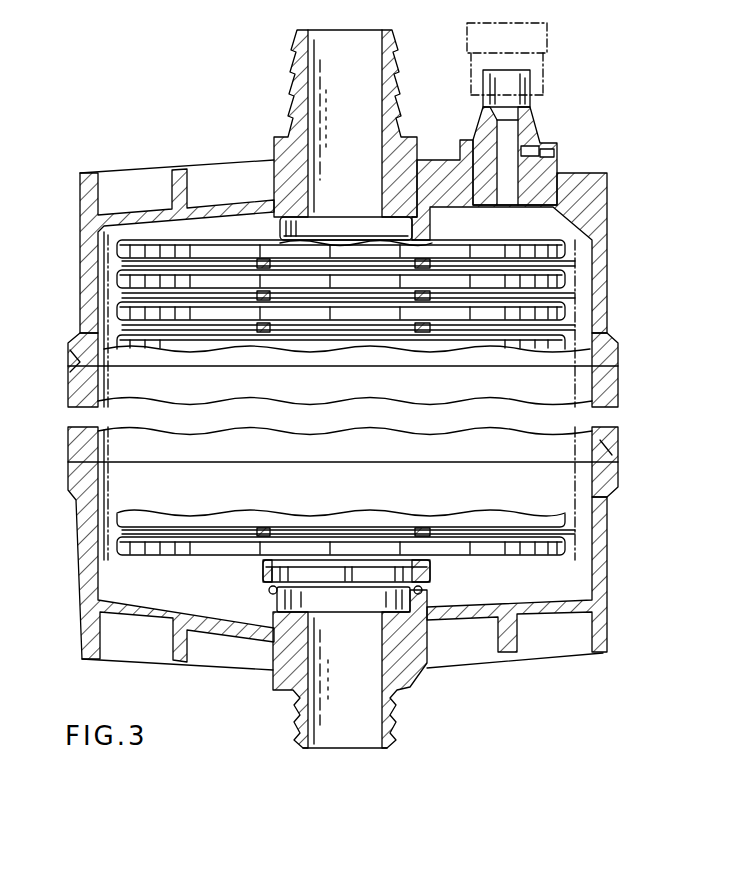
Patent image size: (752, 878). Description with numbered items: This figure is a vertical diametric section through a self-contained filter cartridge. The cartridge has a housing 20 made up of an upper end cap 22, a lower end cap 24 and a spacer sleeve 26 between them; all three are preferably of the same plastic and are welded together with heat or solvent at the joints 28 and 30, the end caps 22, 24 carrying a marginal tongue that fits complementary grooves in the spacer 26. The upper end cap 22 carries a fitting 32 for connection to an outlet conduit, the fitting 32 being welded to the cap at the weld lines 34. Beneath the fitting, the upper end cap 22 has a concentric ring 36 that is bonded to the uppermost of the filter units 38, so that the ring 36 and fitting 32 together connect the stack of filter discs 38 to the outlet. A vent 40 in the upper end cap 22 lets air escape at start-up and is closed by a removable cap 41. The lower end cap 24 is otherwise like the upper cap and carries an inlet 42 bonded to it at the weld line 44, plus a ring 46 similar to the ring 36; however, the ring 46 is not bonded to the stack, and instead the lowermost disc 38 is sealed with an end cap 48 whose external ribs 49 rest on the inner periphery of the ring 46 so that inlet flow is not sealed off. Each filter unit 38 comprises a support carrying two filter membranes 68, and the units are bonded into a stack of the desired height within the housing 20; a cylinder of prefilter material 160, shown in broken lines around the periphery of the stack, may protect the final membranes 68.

The housing 20 is at (627, 214).
The upper end cap 22 is at (80, 234).
The lower end cap 24 is at (76, 519).
The spacer sleeve 26 is at (68, 396).
The weld 28 is at (612, 366).
The weld 30 is at (614, 462).
The fitting 32 is at (398, 100).
The weld lines 34 is at (310, 182).
The concentric ring 36 is at (428, 226).
The filter units 38 is at (505, 247).
The vent 40 is at (536, 117).
The removable cap 41 is at (549, 42).
The inlet 42 is at (396, 726).
The weld line 44 is at (380, 647).
The ring 46 is at (432, 598).
The end cap 48 is at (262, 576).
The external ribs 49 is at (269, 591).
The filter membranes 68 is at (490, 326).
The cylinder of prefilter material 160 is at (105, 288).